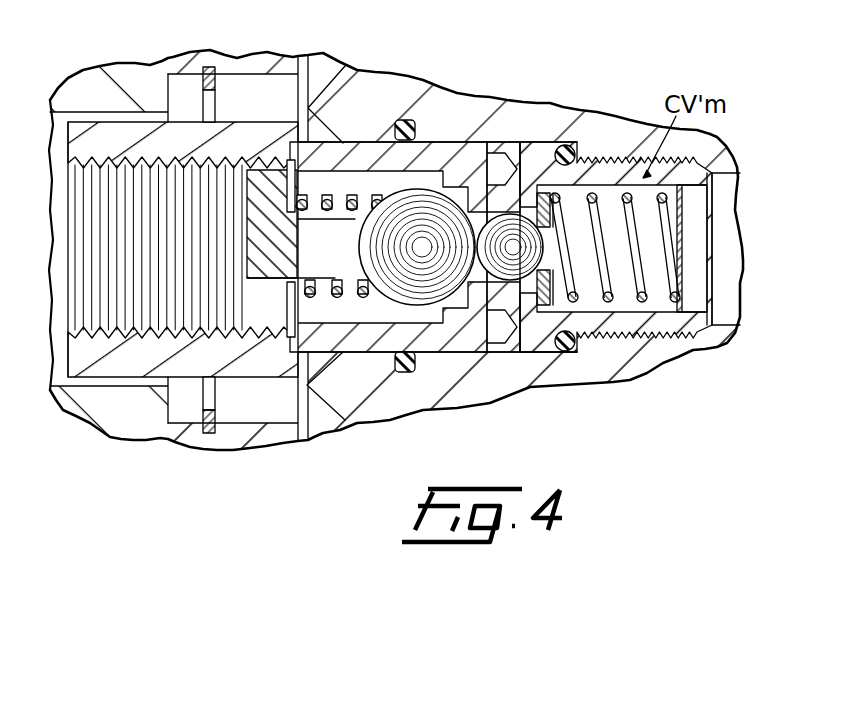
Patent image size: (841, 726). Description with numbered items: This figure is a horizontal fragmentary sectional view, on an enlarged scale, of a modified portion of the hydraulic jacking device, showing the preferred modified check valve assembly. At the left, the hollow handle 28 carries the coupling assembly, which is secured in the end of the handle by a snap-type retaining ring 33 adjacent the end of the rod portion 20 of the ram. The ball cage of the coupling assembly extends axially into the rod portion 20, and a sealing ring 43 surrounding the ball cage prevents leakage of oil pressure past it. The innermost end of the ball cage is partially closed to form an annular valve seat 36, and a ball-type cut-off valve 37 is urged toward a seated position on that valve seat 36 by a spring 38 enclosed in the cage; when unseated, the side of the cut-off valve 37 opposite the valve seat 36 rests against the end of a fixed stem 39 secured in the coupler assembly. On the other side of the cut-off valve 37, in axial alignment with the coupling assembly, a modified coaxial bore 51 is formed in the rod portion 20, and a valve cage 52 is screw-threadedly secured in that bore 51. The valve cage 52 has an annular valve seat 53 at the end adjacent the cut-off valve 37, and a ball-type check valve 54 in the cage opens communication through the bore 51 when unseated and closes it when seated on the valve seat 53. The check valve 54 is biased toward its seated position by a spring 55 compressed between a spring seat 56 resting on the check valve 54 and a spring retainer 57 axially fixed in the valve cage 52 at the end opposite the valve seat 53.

The rod portion 20 is at (428, 378).
The hollow handle 28 is at (106, 90).
The snap-type retaining ring 33 is at (211, 80).
The annular valve seat 36 is at (449, 188).
The ball-type cut-off valve 37 is at (402, 210).
The spring 38 is at (319, 202).
The fixed stem 39 is at (320, 254).
The sealing ring 43 is at (405, 120).
The modified coaxial bore 51 is at (535, 348).
The valve cage 52 is at (677, 320).
The annular valve seat 53 is at (518, 200).
The ball-type check valve 54 is at (502, 285).
The spring 55 is at (600, 313).
The spring seat 56 is at (547, 198).
The spring retainer 57 is at (682, 196).